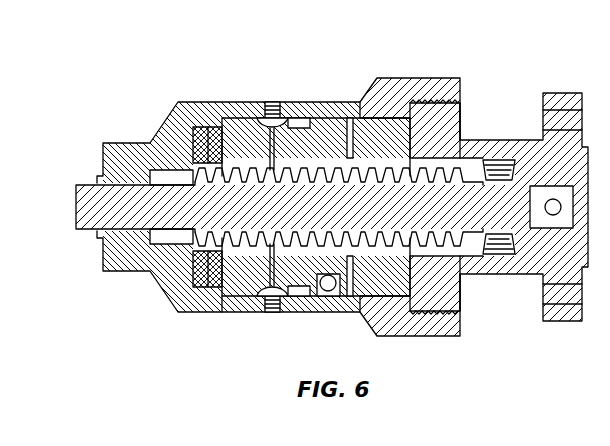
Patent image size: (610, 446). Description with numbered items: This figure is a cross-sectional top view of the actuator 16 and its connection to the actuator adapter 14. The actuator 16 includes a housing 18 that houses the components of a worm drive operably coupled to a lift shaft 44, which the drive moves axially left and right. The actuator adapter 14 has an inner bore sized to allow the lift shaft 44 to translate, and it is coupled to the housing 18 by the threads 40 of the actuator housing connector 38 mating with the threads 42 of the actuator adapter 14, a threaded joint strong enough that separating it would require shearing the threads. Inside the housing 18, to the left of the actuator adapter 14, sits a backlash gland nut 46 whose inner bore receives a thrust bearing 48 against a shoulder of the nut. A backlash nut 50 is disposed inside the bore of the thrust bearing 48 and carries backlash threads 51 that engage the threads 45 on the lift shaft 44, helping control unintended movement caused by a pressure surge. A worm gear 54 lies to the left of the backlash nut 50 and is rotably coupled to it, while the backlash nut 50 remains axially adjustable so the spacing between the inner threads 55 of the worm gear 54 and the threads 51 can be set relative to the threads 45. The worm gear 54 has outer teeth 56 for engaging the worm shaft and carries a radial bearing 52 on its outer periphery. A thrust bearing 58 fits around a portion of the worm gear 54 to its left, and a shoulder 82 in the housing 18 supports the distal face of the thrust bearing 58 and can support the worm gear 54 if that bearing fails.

The actuator 16 is at (116, 50).
The actuator adapter 14 is at (482, 140).
The housing 18 is at (120, 143).
The actuator housing connector 38 is at (462, 87).
The threads 40 is at (455, 120).
The threads 42 is at (400, 125).
The lift shaft 44 is at (282, 193).
The threads 45 is at (226, 127).
The backlash gland nut 46 is at (330, 118).
The thrust bearing 48 is at (410, 105).
The backlash nut 50 is at (280, 102).
The backlash threads 51 is at (395, 190).
The radial bearing 52 is at (312, 305).
The worm gear 54 is at (232, 312).
The inner threads 55 is at (243, 217).
The outer teeth 56 is at (258, 312).
The thrust bearing 58 is at (170, 118).
The shoulder 82 is at (202, 102).